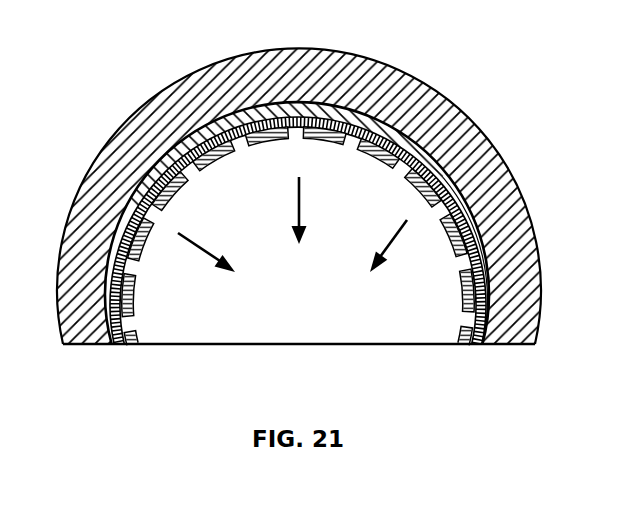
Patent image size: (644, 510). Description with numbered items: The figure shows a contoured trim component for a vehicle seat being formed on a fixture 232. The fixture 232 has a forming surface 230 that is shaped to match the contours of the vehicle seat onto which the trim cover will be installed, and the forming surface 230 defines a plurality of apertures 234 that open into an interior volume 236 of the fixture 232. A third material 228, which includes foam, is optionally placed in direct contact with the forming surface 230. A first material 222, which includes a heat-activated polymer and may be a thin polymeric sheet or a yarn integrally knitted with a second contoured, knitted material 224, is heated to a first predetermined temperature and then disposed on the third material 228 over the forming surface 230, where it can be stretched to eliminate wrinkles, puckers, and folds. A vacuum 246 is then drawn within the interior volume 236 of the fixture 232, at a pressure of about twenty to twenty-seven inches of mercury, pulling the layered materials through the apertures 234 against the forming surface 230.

The first material 222 is at (521, 210).
The second contoured, knitted material 224 is at (537, 252).
The third material 228 is at (487, 151).
The forming surface 230 is at (382, 84).
The fixture 232 is at (460, 345).
The baffle segments 234 is at (137, 268).
The interior volume 236 is at (265, 318).
The vacuum 246 is at (300, 207).